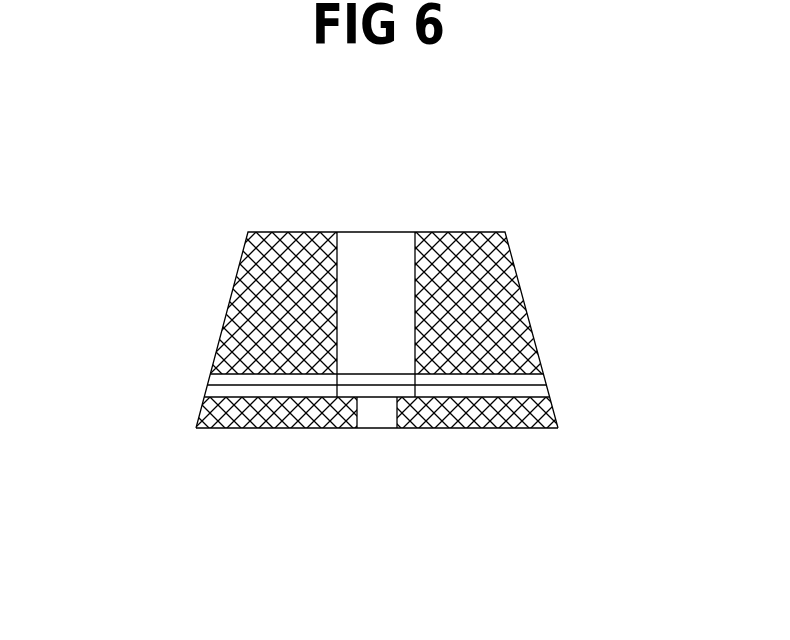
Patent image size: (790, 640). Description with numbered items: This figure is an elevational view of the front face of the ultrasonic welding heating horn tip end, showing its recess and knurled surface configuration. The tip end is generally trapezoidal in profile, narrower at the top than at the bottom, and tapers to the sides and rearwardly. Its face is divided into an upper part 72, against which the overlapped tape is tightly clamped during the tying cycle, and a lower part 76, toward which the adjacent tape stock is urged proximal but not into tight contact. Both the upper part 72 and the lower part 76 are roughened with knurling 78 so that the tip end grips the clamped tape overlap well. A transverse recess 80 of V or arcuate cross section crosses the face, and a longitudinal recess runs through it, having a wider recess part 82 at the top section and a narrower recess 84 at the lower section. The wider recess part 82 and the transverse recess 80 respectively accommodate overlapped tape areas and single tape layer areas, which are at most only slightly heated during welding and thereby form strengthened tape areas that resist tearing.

The upper part 72 is at (518, 282).
The lower part 76 is at (553, 410).
The knurling 78 is at (278, 288).
The transverse recess 80 is at (232, 392).
The wider recess part 82 is at (378, 265).
The narrower recess 84 is at (375, 430).